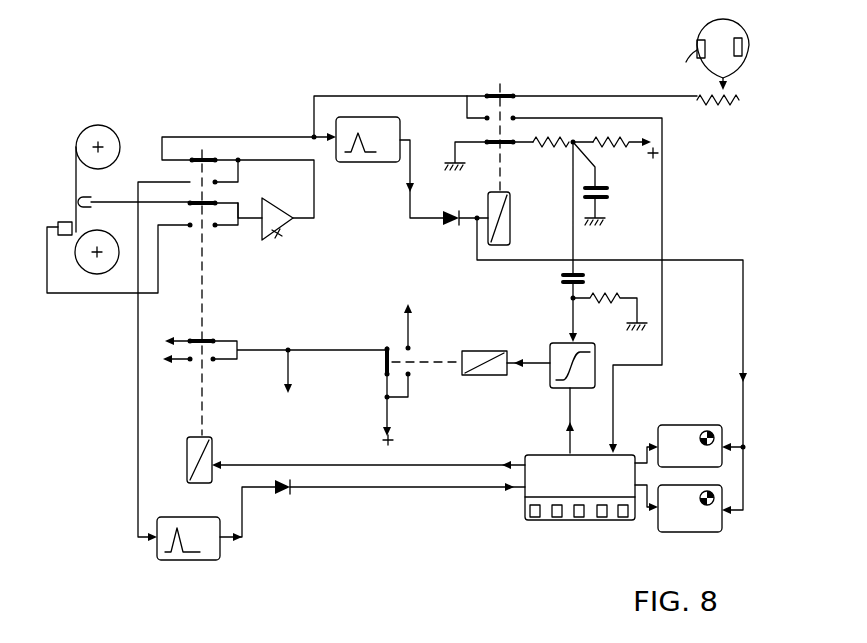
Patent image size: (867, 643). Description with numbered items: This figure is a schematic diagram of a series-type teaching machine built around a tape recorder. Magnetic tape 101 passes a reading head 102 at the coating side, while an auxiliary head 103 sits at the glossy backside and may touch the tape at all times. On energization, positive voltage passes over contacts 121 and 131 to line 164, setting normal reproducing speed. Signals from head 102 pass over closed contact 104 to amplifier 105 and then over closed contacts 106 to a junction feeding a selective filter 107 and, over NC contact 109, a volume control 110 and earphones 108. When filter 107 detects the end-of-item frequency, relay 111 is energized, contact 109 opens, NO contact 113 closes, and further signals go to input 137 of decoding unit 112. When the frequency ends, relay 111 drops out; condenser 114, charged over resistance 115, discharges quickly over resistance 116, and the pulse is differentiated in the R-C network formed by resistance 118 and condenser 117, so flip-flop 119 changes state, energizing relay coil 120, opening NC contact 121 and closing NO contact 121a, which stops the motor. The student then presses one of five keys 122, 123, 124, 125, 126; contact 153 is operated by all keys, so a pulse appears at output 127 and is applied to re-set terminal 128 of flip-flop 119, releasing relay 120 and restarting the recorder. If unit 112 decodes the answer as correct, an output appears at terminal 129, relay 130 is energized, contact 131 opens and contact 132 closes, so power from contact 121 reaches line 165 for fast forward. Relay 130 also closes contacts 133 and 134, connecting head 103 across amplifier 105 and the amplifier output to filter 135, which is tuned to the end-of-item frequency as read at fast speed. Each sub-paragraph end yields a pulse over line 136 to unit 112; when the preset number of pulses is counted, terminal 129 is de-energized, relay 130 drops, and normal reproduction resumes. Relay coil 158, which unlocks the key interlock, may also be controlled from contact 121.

The magnetic tape 101 is at (105, 232).
The reading head 102 is at (90, 200).
The auxiliary head 103 is at (67, 222).
The contact 104 is at (222, 199).
The amplifier 105 is at (294, 226).
The contacts 106 is at (214, 158).
The selective filter 107 is at (385, 124).
The earphones 108 is at (703, 68).
The NC contact 109 is at (504, 98).
The volume control 110 is at (717, 110).
The relay 111 is at (511, 223).
The decoding unit 112 is at (553, 462).
The NO contact 113 is at (510, 117).
The condenser 114 is at (609, 190).
The resistance 115 is at (618, 148).
The resistance 116 is at (541, 148).
The R-C network condenser 117 is at (585, 278).
The R-C network resistance 118 is at (610, 315).
The flip-flop 119 is at (595, 355).
The relay coil 120 is at (503, 333).
The NC relay contact 121 is at (380, 366).
The NO contact 121a is at (412, 376).
The key 122 is at (532, 519).
The key 123 is at (556, 519).
The key 124 is at (579, 519).
The key 125 is at (602, 519).
The key 126 is at (623, 519).
The output 127 is at (574, 455).
The re-set terminal 128 is at (566, 390).
The terminal 129 is at (524, 462).
The relay 130 is at (213, 444).
The contact 131 is at (209, 335).
The contact 132 is at (217, 363).
The contact 133 is at (212, 228).
The contact 134 is at (222, 183).
The filter 135 is at (202, 527).
The line 136 is at (514, 490).
The input 137 is at (614, 452).
The contact 153 is at (423, 322).
The relay coil 158 is at (291, 385).
The line 164 is at (168, 330).
The line 165 is at (168, 371).